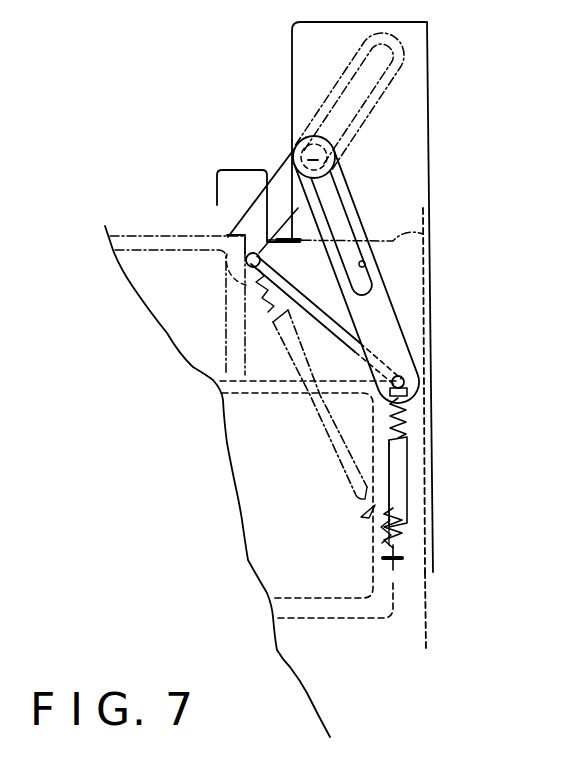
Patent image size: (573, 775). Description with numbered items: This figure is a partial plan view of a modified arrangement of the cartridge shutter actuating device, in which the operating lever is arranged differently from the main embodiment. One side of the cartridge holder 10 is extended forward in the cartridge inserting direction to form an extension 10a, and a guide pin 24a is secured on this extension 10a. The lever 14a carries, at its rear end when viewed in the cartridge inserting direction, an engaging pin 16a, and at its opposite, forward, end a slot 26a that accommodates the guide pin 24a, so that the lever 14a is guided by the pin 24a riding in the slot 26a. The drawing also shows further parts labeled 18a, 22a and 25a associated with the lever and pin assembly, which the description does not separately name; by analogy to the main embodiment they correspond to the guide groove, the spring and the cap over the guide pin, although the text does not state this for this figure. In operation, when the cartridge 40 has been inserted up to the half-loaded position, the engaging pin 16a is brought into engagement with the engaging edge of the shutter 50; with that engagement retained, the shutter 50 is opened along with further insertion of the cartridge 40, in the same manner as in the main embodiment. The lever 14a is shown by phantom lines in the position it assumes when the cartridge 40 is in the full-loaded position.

The cartridge holder 10 is at (445, 520).
The extension 10a is at (410, 98).
The lever 14a is at (385, 326).
The engaging pin 16a is at (400, 378).
The connecting rod 18a is at (290, 278).
The spring unit 22a is at (400, 468).
The guide pin 24a is at (292, 146).
The pivot bushing 25a is at (297, 140).
The slot 26a is at (365, 258).
The cartridge 40 is at (436, 621).
The shutter 50 is at (395, 583).